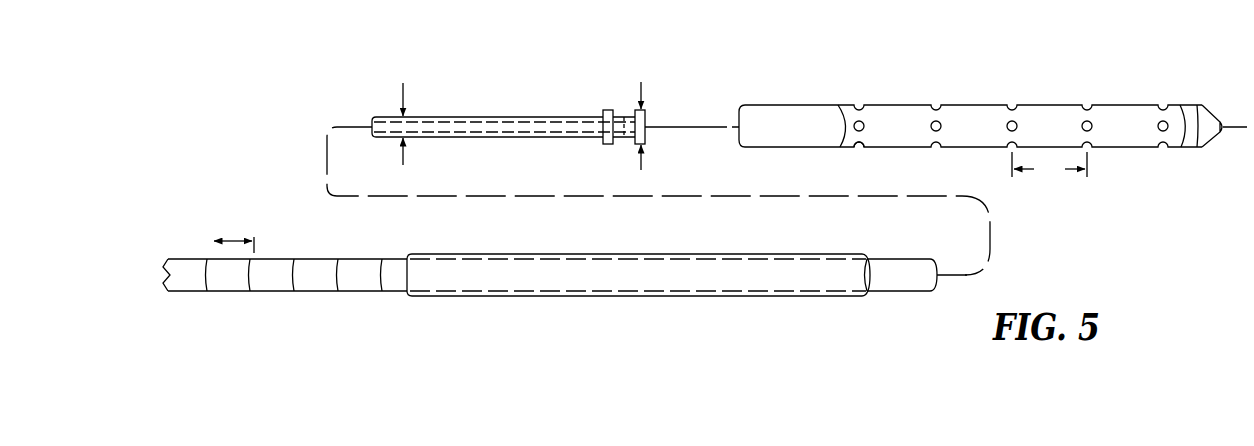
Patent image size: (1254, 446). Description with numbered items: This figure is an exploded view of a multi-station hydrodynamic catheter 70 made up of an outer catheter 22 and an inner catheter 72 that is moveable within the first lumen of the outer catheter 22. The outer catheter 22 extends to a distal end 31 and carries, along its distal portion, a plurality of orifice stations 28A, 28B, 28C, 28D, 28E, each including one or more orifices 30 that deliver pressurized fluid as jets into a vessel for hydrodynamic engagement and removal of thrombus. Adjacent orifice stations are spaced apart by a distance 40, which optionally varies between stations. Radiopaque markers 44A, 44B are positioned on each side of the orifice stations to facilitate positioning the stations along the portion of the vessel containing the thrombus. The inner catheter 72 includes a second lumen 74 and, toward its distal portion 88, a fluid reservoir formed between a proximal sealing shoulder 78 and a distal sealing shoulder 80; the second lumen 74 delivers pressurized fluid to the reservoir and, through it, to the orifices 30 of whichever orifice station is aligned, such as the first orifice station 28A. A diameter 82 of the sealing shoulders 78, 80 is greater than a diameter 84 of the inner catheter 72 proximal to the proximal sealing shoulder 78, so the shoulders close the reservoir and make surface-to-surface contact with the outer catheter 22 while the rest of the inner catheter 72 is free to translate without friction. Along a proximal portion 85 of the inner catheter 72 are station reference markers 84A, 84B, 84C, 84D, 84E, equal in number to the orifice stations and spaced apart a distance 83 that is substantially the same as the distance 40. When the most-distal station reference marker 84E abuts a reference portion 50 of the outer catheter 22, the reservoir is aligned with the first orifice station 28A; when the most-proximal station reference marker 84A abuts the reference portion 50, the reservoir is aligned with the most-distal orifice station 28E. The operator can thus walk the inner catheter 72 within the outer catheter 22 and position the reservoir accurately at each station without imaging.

The multi-station hydrodynamic catheter 70 is at (277, 81).
The inner catheter 72 is at (440, 117).
The second lumen 74 is at (373, 117).
The proximal sealing shoulder 78 is at (610, 109).
The distal sealing shoulder 80 is at (646, 111).
The diameter of the sealing shoulders 82 is at (643, 116).
The diameter of the inner catheter 84 is at (404, 114).
The distal portion of the inner catheter 88 is at (623, 146).
The outer catheter 22 is at (777, 106).
The first orifice station 28A is at (862, 89).
The second orifice station 28B is at (938, 89).
The third orifice station 28C is at (1015, 89).
The fourth orifice station 28D is at (1090, 89).
The most-distal orifice station 28E is at (1166, 89).
The orifice 30 is at (857, 150).
The distal end 31 is at (1209, 157).
The distance between orifice stations 40 is at (1049, 166).
The radiopaque marker 44A is at (846, 106).
The radiopaque marker 44B is at (1182, 148).
The reference portion 50 is at (407, 257).
The distance between station reference markers 83 is at (233, 240).
The most-proximal station reference marker 84A is at (210, 292).
The station reference marker 84B is at (253, 292).
The station reference marker 84C is at (297, 292).
The station reference marker 84D is at (341, 292).
The most-distal station reference marker 84E is at (385, 292).
The proximal portion of the inner catheter 85 is at (305, 250).